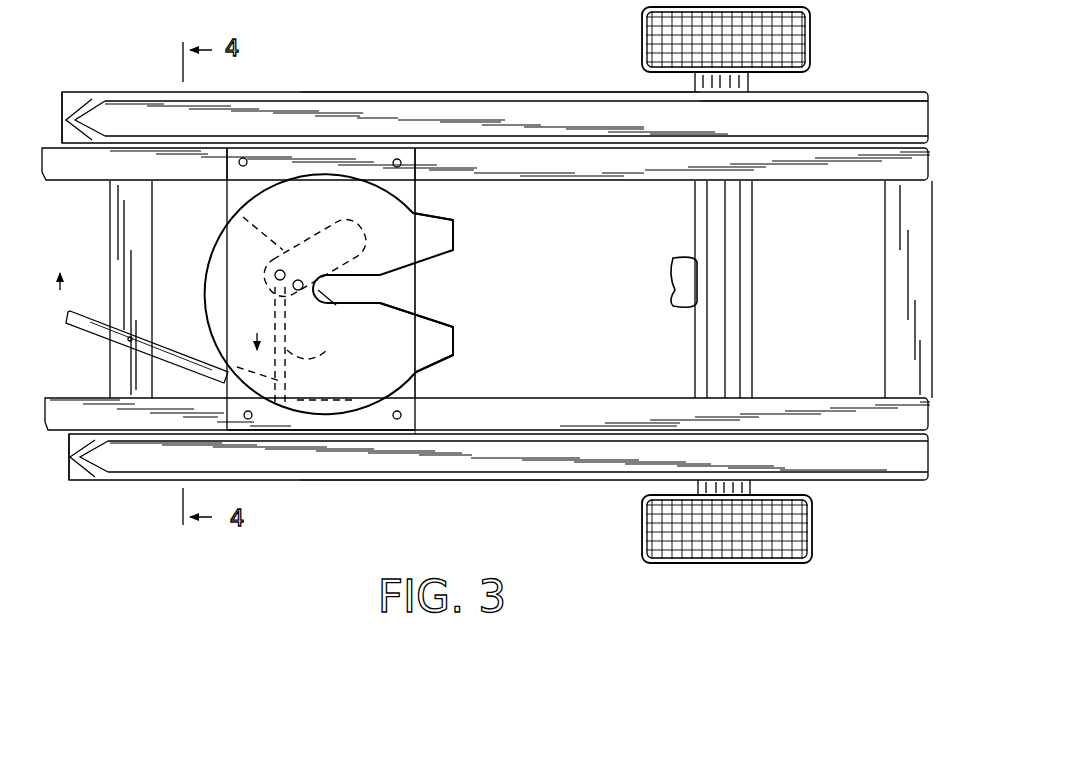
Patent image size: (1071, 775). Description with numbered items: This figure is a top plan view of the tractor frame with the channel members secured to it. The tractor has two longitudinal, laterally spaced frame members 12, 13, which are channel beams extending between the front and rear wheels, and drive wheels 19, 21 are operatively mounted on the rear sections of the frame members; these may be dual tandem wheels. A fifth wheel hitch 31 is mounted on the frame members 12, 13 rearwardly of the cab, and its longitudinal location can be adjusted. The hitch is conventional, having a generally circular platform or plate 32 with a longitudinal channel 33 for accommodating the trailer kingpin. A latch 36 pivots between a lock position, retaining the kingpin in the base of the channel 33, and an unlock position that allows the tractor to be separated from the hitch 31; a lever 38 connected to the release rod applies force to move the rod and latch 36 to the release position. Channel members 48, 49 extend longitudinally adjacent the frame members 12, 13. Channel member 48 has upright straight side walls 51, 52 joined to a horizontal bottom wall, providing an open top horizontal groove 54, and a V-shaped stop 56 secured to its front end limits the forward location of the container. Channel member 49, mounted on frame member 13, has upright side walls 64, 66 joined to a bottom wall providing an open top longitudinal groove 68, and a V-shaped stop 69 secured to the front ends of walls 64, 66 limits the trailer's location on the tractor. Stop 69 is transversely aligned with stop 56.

The frame member 12 is at (613, 408).
The frame member 13 is at (640, 170).
The drive wheel 19 is at (767, 552).
The drive wheel 21 is at (806, 32).
The fifth wheel hitch 31 is at (470, 255).
The platform or plate 32 is at (388, 353).
The longitudinal channel 33 is at (390, 289).
The latch 36 is at (234, 212).
The lever 38 is at (95, 332).
The channel member 48 is at (480, 483).
The channel member 49 is at (523, 88).
The side wall 51 is at (310, 478).
The side wall 52 is at (348, 443).
The groove 54 is at (408, 452).
The V-shaped stop 56 is at (83, 478).
The side wall 64 is at (352, 92).
The side wall 66 is at (402, 135).
The groove 68 is at (584, 117).
The V-shaped stop 69 is at (87, 99).